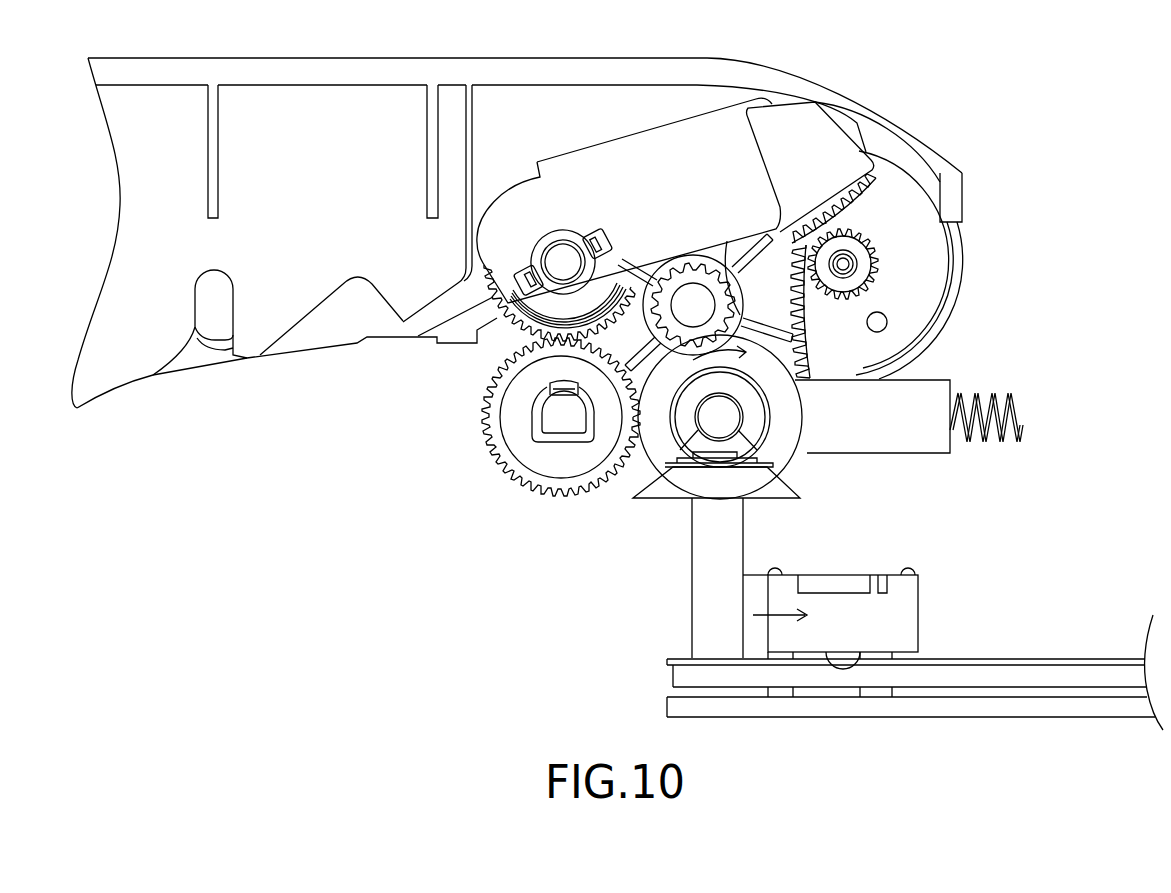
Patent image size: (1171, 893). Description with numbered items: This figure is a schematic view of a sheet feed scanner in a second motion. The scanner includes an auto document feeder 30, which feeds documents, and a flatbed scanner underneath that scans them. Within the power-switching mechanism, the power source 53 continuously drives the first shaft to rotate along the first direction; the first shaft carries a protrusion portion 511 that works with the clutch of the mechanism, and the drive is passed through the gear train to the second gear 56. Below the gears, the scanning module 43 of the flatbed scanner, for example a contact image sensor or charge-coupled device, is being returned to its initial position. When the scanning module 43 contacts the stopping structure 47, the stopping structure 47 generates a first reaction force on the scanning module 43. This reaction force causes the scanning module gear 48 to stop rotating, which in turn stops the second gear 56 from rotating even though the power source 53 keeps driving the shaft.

The auto document feeder 30 is at (731, 46).
The power source 53 is at (962, 290).
The second gear 56 is at (657, 458).
The protrusion portion 511 is at (727, 412).
The scanning module gear 48 is at (683, 487).
The stopping structure 47 is at (755, 583).
The scanning module 43 is at (907, 613).